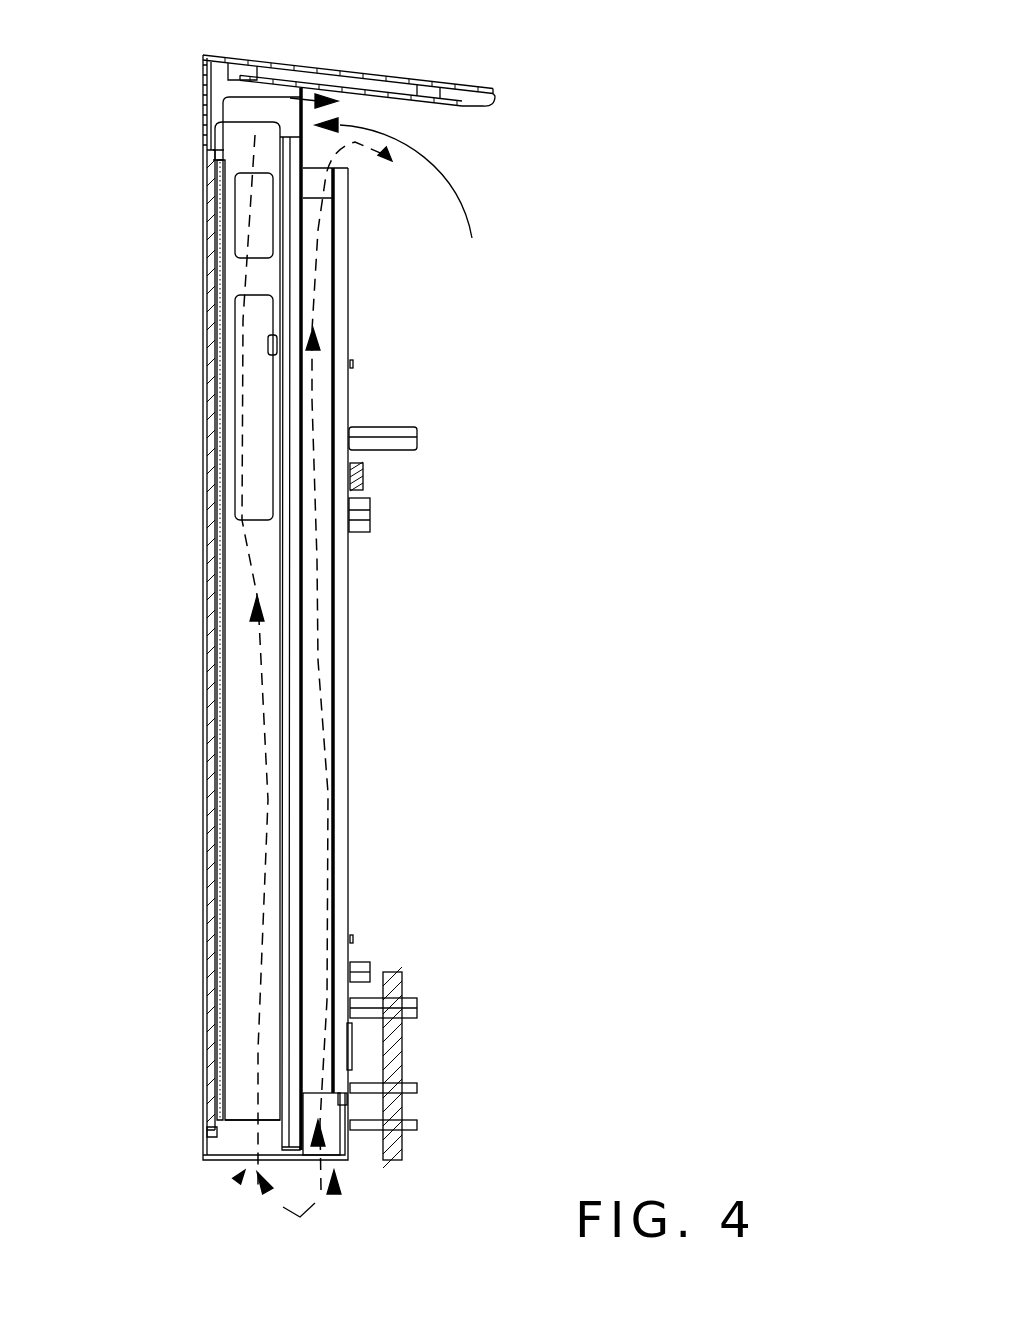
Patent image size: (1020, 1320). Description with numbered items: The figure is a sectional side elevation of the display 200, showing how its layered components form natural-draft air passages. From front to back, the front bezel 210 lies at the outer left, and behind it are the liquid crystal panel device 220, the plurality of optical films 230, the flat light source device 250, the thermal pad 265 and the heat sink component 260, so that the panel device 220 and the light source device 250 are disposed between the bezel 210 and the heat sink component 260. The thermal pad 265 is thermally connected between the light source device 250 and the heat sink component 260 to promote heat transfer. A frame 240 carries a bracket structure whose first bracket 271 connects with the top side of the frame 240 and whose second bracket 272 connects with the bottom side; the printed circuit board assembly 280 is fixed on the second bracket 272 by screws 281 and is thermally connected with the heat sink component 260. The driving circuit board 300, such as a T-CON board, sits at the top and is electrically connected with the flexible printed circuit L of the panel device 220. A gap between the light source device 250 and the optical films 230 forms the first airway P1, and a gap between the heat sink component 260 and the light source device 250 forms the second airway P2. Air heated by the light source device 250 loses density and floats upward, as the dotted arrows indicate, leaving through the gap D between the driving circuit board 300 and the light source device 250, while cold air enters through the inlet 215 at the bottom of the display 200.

The display 200 is at (708, 120).
The front bezel 210 is at (205, 765).
The flexible printed circuit L is at (200, 62).
The liquid crystal panel device 220 is at (212, 828).
The optical films 230 is at (222, 918).
The frame 240 is at (255, 277).
The flat light source device 250 is at (288, 318).
The thermal pad 265 is at (303, 275).
The heat sink component 260 is at (340, 215).
The printed circuit board assembly 280 is at (397, 987).
The screws 281 is at (418, 1088).
The second bracket 272 is at (350, 1147).
The driving circuit board 300 is at (448, 108).
The first bracket 271 is at (410, 80).
The gap D is at (387, 179).
The first airway P1 is at (250, 700).
The second airway P2 is at (322, 685).
The inlet 215 is at (238, 1180).